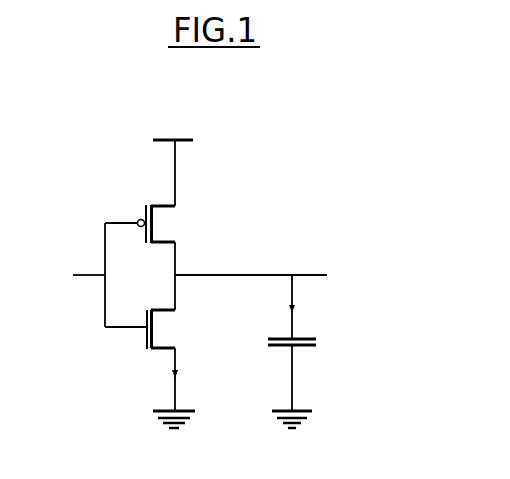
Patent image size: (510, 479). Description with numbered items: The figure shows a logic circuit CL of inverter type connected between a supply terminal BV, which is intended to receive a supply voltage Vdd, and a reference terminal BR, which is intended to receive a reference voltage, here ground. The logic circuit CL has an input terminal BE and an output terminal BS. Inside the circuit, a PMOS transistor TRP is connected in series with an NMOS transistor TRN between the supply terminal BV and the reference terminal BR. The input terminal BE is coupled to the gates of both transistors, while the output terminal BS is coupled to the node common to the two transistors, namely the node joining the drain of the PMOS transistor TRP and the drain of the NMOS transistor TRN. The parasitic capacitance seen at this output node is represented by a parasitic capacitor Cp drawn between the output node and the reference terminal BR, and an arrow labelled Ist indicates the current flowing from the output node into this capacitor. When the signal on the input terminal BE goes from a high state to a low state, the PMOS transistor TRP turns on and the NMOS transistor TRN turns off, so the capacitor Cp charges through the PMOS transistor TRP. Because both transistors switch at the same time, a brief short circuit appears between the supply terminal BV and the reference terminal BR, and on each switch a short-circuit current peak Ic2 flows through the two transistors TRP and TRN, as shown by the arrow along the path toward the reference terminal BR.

The supply voltage Vdd is at (172, 163).
The supply terminal BV is at (162, 148).
The logic circuit CL is at (108, 203).
The PMOS transistor TRP is at (170, 221).
The NMOS transistor TRN is at (170, 327).
The input terminal BE is at (73, 273).
The output terminal BS is at (324, 272).
The output current Ist is at (300, 307).
The parasitic capacitor Cp is at (318, 342).
The short-circuit current peak Ic2 is at (184, 379).
The reference terminal BR is at (150, 411).